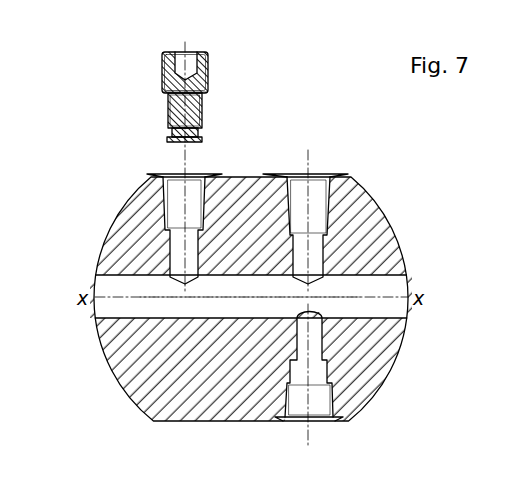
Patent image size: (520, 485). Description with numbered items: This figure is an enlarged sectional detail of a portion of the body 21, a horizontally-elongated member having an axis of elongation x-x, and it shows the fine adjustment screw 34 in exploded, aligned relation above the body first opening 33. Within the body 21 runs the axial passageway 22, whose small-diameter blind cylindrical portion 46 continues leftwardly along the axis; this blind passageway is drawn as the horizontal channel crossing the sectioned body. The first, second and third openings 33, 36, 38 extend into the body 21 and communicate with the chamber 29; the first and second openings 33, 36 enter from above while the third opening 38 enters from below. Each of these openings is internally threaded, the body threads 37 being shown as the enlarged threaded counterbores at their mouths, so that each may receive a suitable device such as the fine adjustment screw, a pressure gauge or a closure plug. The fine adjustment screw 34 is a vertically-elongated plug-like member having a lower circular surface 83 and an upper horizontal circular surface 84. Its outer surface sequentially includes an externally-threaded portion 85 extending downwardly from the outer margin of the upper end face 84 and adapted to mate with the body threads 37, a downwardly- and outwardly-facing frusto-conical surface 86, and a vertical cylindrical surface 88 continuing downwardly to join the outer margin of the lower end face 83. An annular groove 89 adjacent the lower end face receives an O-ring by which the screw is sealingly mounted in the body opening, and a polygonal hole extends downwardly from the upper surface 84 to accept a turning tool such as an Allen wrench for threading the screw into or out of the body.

The body 21 is at (112, 220).
The axial passageway 22 is at (375, 287).
The chamber 29 is at (249, 306).
The first opening 33 is at (177, 193).
The fine adjustment screw 34 is at (233, 47).
The second opening 36 is at (315, 187).
The body threads 37 is at (195, 218).
The third opening 38 is at (317, 415).
The small-diameter blind cylindrical portion 46 is at (107, 313).
The lower circular surface 83 is at (197, 145).
The upper horizontal circular surface 84 is at (170, 50).
The externally-threaded portion 85 is at (162, 78).
The frusto-conical surface 86 is at (205, 95).
The vertical cylindrical surface 88 is at (167, 115).
The annular groove 89 is at (202, 135).